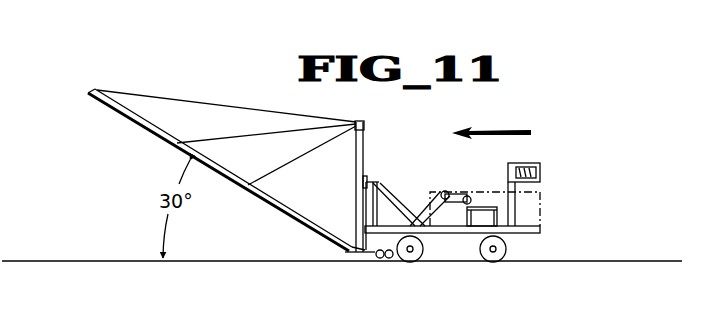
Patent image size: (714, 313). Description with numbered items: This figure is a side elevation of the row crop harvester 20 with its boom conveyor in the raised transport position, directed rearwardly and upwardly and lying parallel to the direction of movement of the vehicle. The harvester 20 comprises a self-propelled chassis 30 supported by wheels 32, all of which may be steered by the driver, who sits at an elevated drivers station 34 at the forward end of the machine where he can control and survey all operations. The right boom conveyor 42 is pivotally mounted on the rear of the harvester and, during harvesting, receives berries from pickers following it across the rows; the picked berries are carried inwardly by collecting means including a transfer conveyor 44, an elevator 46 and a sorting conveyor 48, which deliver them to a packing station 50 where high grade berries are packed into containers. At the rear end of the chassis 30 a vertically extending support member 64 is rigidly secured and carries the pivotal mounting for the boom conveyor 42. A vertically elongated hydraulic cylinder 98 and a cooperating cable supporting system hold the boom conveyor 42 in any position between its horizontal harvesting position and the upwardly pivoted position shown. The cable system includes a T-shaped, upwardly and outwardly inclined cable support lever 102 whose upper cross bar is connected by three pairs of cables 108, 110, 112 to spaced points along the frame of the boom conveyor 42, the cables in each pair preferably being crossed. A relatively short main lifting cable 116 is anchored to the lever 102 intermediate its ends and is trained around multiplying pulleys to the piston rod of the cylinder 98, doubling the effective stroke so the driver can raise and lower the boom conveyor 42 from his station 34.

The row crop harvester 20 is at (542, 211).
The self-propelled chassis 30 is at (541, 232).
The wheels 32 is at (423, 256).
The elevated drivers station 34 is at (539, 165).
The right boom conveyor 42 is at (127, 120).
The transfer conveyor 44 is at (379, 259).
The elevator 46 is at (418, 211).
The sorting conveyor 48 is at (450, 191).
The packing station 50 is at (491, 205).
The support member 64 is at (369, 181).
The hydraulic cylinder 98 is at (362, 211).
The cable support lever 102 is at (365, 128).
The cables 108 is at (290, 162).
The cables 110 is at (233, 136).
The cables 112 is at (165, 98).
The main lifting cable 116 is at (358, 180).